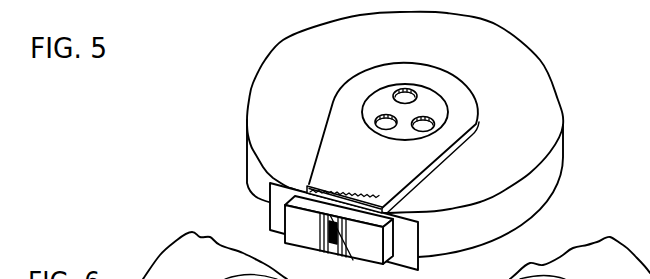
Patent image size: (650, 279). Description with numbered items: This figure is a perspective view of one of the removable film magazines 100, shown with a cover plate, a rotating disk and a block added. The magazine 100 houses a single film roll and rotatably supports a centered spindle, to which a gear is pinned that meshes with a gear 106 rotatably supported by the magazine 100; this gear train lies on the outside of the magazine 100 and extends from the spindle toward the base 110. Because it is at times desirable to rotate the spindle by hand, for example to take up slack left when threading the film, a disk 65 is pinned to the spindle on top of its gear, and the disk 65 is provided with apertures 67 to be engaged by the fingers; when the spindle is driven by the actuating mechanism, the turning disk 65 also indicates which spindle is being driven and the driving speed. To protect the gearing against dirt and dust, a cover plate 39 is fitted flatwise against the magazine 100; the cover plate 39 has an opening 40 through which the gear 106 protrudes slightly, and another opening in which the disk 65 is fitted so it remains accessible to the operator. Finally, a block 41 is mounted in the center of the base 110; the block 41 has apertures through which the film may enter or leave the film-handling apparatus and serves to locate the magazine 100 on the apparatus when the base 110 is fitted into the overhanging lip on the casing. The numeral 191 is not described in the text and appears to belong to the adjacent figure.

In FIG. 5, the removable film magazine 100 is at (271, 57).
In FIG. 6, the removable film magazine 100 is at (580, 258).
In FIG. 5, the disk 65 is at (431, 89).
In FIG. 5, the apertures 67 is at (387, 130).
In FIG. 5, the cover plate 39 is at (324, 138).
In FIG. 5, the base 110 is at (270, 200).
In FIG. 5, the gear 106 is at (323, 200).
In FIG. 5, the opening 40 is at (379, 209).
In FIG. 5, the block 41 is at (353, 259).
In FIG. 6, the enclosure wall 191 is at (215, 255).